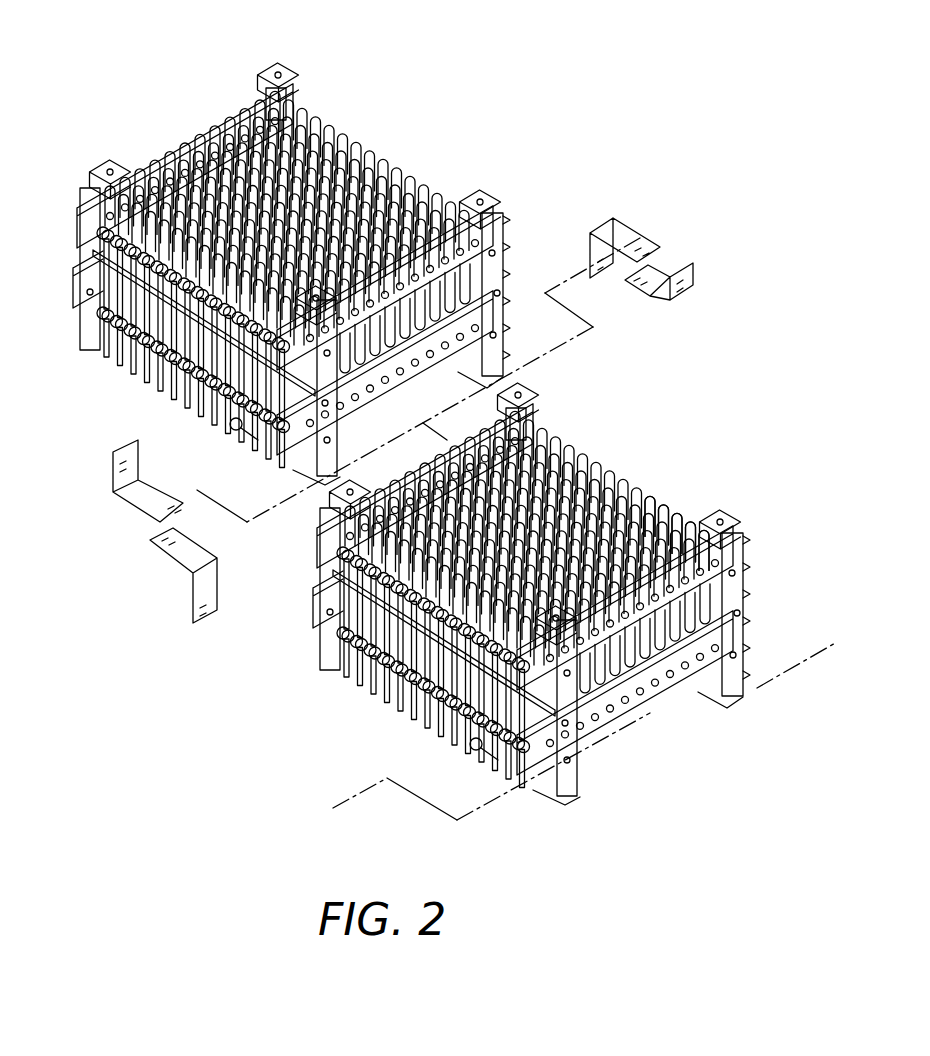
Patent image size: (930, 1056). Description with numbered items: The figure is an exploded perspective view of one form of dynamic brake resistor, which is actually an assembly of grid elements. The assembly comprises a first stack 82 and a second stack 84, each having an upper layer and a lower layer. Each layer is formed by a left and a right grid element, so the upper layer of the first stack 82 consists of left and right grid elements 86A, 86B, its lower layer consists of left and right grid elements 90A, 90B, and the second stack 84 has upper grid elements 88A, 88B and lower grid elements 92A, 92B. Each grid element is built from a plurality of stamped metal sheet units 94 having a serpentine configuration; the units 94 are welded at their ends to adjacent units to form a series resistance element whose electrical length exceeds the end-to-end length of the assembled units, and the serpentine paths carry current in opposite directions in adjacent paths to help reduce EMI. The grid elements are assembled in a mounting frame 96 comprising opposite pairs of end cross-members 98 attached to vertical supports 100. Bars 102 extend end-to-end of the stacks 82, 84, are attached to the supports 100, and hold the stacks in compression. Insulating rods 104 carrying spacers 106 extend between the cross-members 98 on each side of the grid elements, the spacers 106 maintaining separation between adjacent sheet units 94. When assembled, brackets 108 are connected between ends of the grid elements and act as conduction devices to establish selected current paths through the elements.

The first stack 82 is at (320, 286).
The second stack 84 is at (527, 607).
The left grid element of upper layer 86A is at (150, 186).
The right grid element of upper layer 86B is at (432, 200).
The left grid element of upper layer 88A is at (350, 562).
The right grid element of upper layer 88B is at (600, 472).
The left grid element of lower layer 90A is at (127, 343).
The right grid element of lower layer 90B is at (433, 323).
The left grid element of lower layer 92A is at (390, 688).
The right grid element of lower layer 92B is at (668, 647).
The stamped metal sheet unit 94 is at (680, 515).
The mounting frame 96 is at (746, 528).
The end cross-member 98 is at (236, 120).
The vertical support 100 is at (104, 160).
The bar 102 is at (95, 253).
The insulating rod 104 is at (545, 766).
The spacer 106 is at (474, 745).
The bracket 108 is at (697, 272).